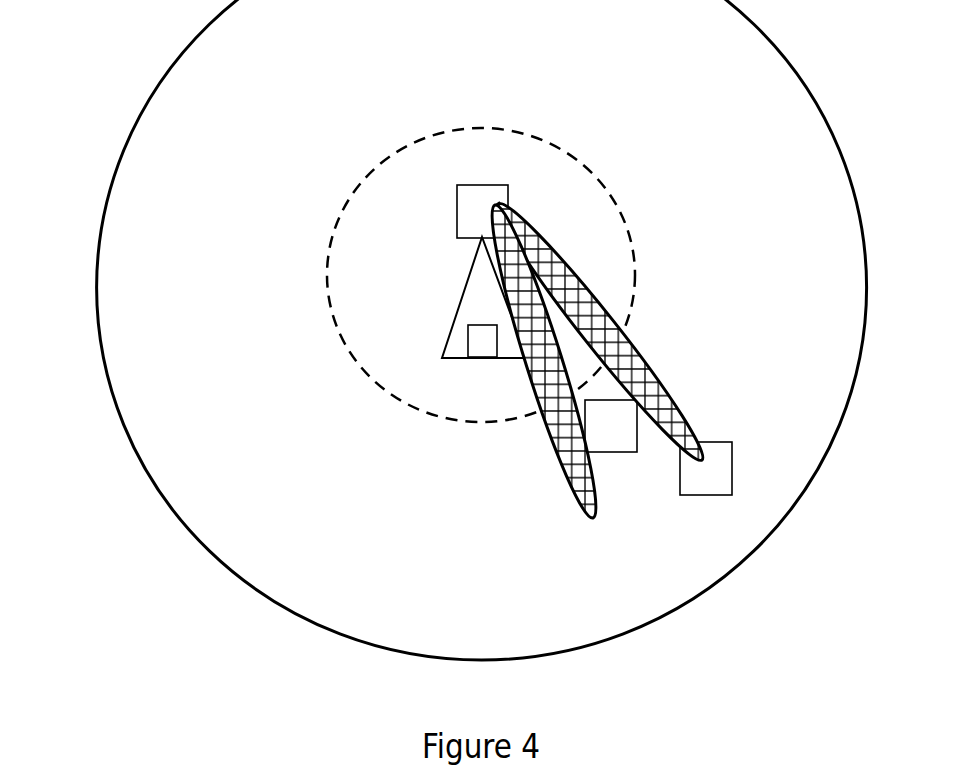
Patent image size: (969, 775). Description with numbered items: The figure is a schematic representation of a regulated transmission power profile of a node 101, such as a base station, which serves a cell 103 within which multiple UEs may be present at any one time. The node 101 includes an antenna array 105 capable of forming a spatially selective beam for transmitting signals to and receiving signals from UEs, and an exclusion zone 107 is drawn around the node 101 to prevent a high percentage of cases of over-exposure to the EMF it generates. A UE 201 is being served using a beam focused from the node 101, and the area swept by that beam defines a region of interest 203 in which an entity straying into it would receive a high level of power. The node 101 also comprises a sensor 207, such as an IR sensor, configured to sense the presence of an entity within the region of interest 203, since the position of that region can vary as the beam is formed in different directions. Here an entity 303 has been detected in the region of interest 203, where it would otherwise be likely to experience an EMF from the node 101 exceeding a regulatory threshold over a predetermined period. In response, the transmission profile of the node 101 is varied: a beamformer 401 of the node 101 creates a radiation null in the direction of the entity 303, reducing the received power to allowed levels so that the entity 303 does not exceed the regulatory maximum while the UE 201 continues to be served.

The node 101 is at (457, 302).
The cell 103 is at (148, 473).
The antenna array 105 is at (483, 185).
The exclusion zone 107 is at (358, 372).
The UE 201 is at (733, 465).
The region of interest 203 is at (627, 373).
The sensor 207 is at (468, 340).
The entity 303 is at (608, 430).
The beamformer 401 is at (488, 202).